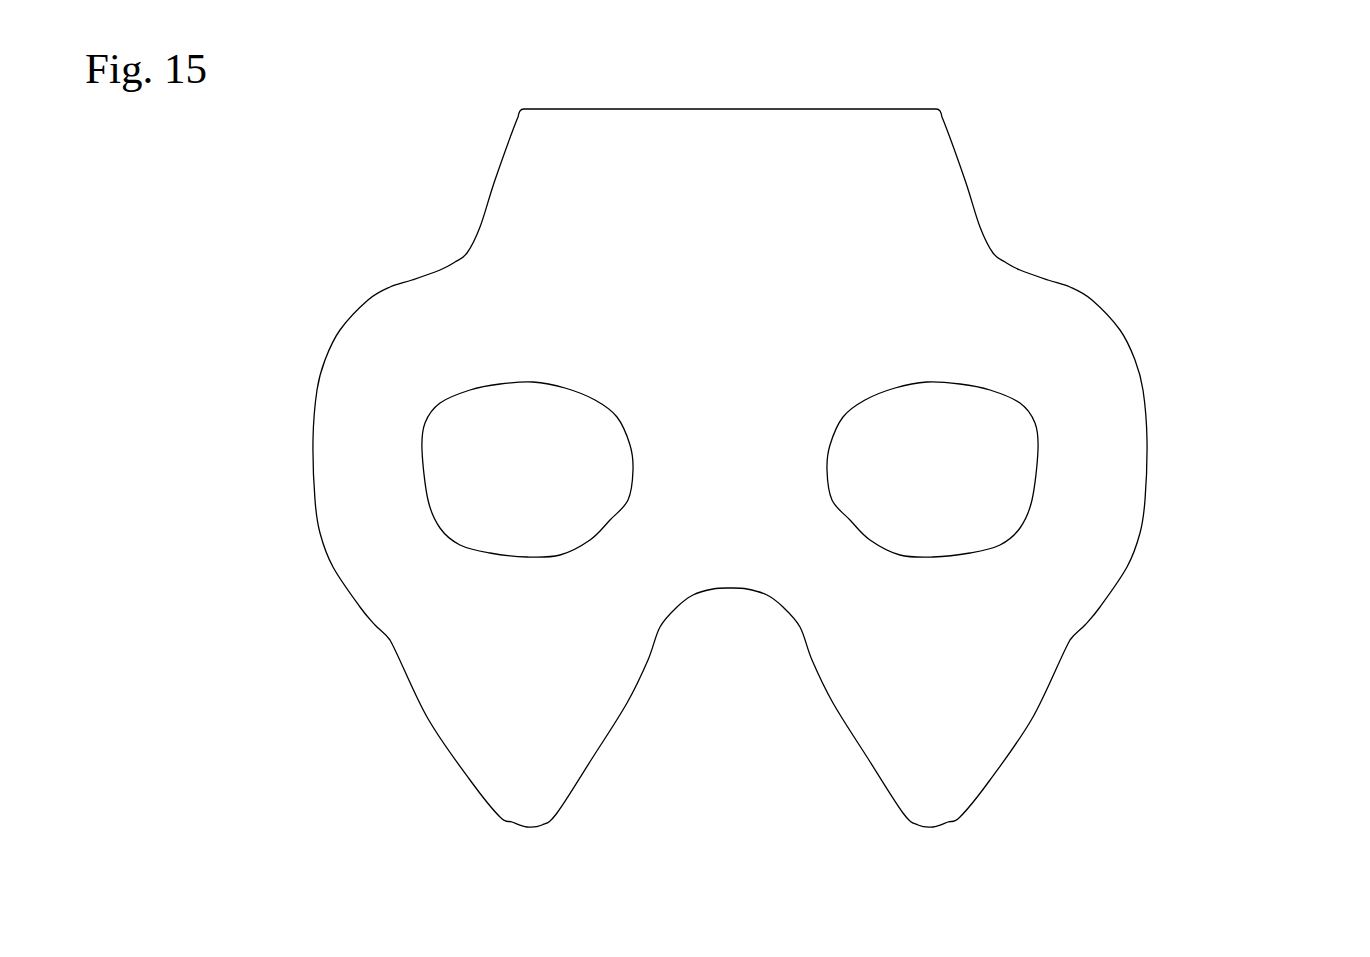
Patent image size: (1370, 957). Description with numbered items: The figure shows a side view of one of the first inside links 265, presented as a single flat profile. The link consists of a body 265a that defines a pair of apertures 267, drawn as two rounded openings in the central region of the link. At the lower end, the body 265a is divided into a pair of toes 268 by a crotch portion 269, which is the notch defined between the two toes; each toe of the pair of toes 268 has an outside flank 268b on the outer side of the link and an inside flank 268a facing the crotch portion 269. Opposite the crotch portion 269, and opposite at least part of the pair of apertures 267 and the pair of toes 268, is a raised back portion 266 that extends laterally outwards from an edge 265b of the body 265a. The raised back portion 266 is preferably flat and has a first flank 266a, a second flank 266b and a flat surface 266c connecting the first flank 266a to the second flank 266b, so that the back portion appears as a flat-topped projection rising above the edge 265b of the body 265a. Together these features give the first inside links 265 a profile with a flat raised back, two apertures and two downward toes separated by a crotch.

The first inside link 265 is at (1177, 198).
The body 265a is at (1030, 274).
The edge of the body 265b is at (413, 281).
The back portion 266 is at (850, 103).
The first flank 266a is at (967, 183).
The second flank 266b is at (493, 183).
The flat surface 266c is at (710, 108).
The apertures 267 is at (568, 382).
The toes 268 is at (513, 813).
The inside flank 268a is at (832, 695).
The outside flank 268b is at (1033, 713).
The crotch portion 269 is at (693, 600).